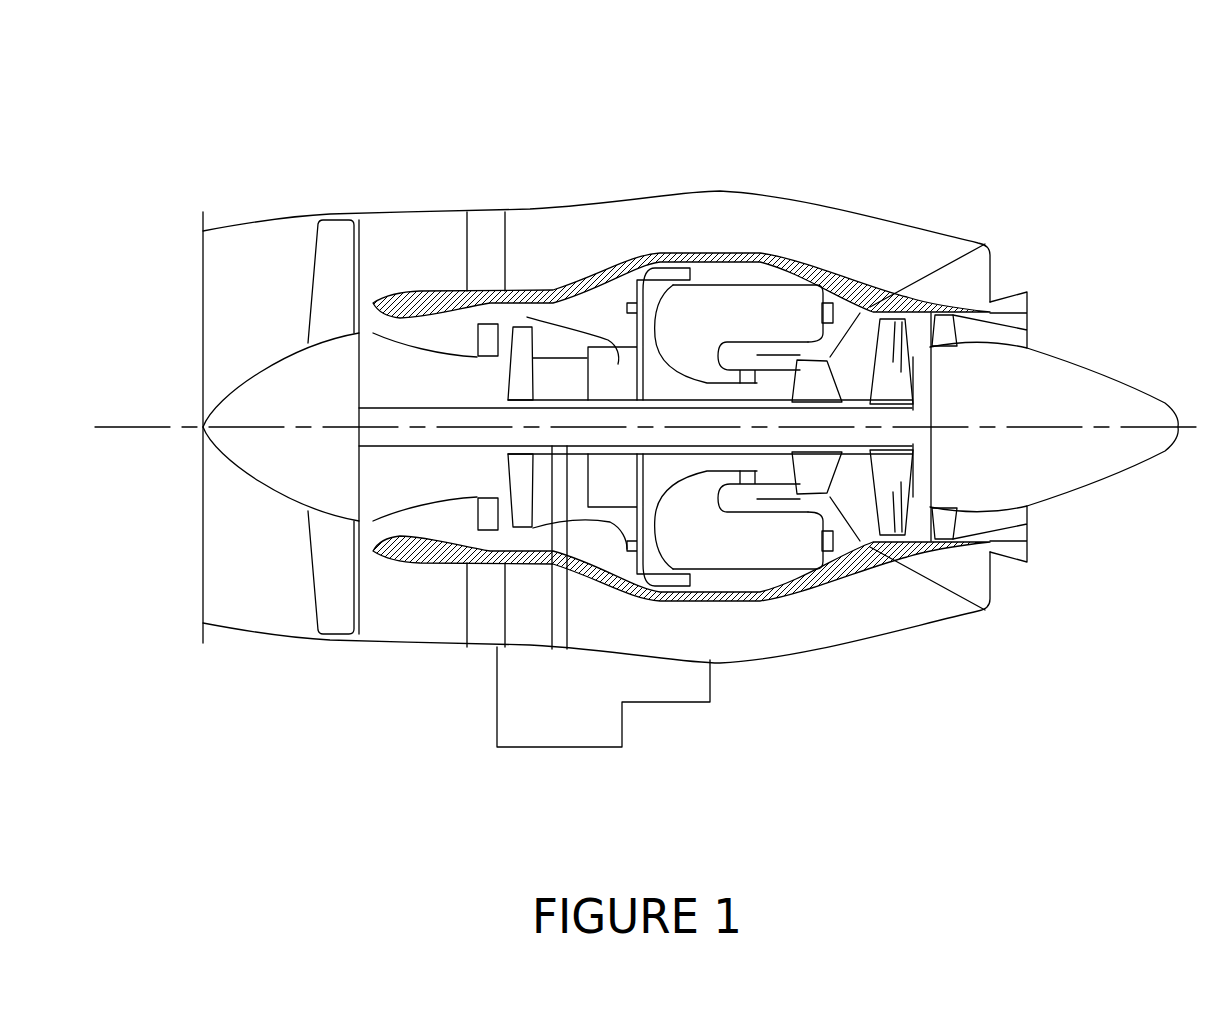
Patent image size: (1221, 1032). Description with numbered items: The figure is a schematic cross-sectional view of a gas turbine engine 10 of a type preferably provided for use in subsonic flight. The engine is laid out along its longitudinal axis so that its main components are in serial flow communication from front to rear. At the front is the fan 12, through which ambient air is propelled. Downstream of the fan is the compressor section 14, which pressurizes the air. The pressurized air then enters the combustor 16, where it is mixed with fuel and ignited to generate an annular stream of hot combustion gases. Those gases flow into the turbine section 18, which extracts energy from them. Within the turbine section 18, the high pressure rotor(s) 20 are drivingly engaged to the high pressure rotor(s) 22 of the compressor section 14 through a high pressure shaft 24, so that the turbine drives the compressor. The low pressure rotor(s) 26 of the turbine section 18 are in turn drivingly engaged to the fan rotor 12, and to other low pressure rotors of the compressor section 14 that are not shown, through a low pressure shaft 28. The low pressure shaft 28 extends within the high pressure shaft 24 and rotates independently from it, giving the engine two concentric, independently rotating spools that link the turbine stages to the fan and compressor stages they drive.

The gas turbine engine 10 is at (878, 133).
The fan 12 is at (330, 561).
The compressor section 14 is at (553, 337).
The combustor 16 is at (740, 303).
The turbine section 18 is at (860, 567).
The high pressure rotor(s) 20 is at (827, 362).
The high pressure rotor(s) 22 is at (613, 363).
The high pressure shaft 24 is at (747, 378).
The low pressure rotor(s) 26 is at (892, 302).
The low pressure shaft 28 is at (404, 447).